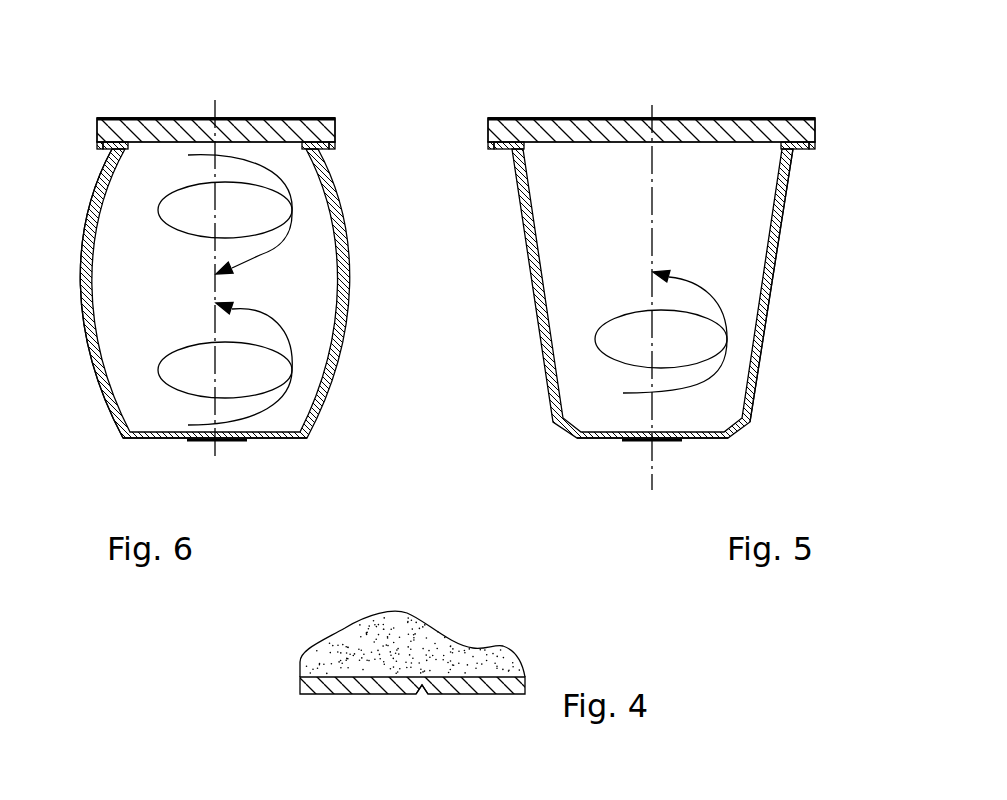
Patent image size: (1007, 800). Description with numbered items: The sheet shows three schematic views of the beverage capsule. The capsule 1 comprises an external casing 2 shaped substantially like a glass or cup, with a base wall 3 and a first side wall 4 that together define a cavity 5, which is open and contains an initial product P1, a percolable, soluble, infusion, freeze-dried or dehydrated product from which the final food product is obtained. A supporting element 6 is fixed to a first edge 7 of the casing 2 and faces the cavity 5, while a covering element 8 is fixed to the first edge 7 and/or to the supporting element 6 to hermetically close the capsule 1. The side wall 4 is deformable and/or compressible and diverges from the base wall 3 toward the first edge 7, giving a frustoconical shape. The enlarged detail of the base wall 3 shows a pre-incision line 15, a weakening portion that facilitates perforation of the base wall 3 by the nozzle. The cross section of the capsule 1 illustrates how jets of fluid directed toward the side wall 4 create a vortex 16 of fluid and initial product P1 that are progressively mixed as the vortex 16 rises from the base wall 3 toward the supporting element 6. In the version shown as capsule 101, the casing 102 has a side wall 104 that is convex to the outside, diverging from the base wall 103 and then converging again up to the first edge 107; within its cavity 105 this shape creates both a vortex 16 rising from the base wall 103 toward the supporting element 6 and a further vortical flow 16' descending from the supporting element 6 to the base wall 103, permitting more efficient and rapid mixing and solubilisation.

In FIG. 5, the capsule 1 is at (747, 77).
In FIG. 5, the external casing 2 is at (777, 270).
In FIG. 5, the base wall 3 is at (592, 435).
In FIG. 4, the base wall 3 is at (342, 682).
In FIG. 5, the first side wall 4 is at (783, 188).
In FIG. 5, the cavity 5 is at (595, 216).
In FIG. 6, the supporting element 6 is at (262, 130).
In FIG. 5, the supporting element 6 is at (580, 132).
In FIG. 5, the first edge 7 is at (500, 147).
In FIG. 6, the covering element 8 is at (220, 118).
In FIG. 5, the covering element 8 is at (527, 118).
In FIG. 4, the pre-incision line 15 is at (420, 693).
In FIG. 6, the vortex 16 is at (285, 373).
In FIG. 5, the vortex 16 is at (715, 359).
In FIG. 6, the further vortical flow 16' is at (287, 237).
In FIG. 4, the initial product P1 is at (453, 658).
In FIG. 6, the capsule 101 is at (177, 87).
In FIG. 6, the casing 102 is at (78, 277).
In FIG. 6, the base wall 103 is at (272, 438).
In FIG. 6, the side wall 104 is at (100, 378).
In FIG. 6, the cavity 105 is at (183, 297).
In FIG. 6, the first edge 107 is at (333, 149).